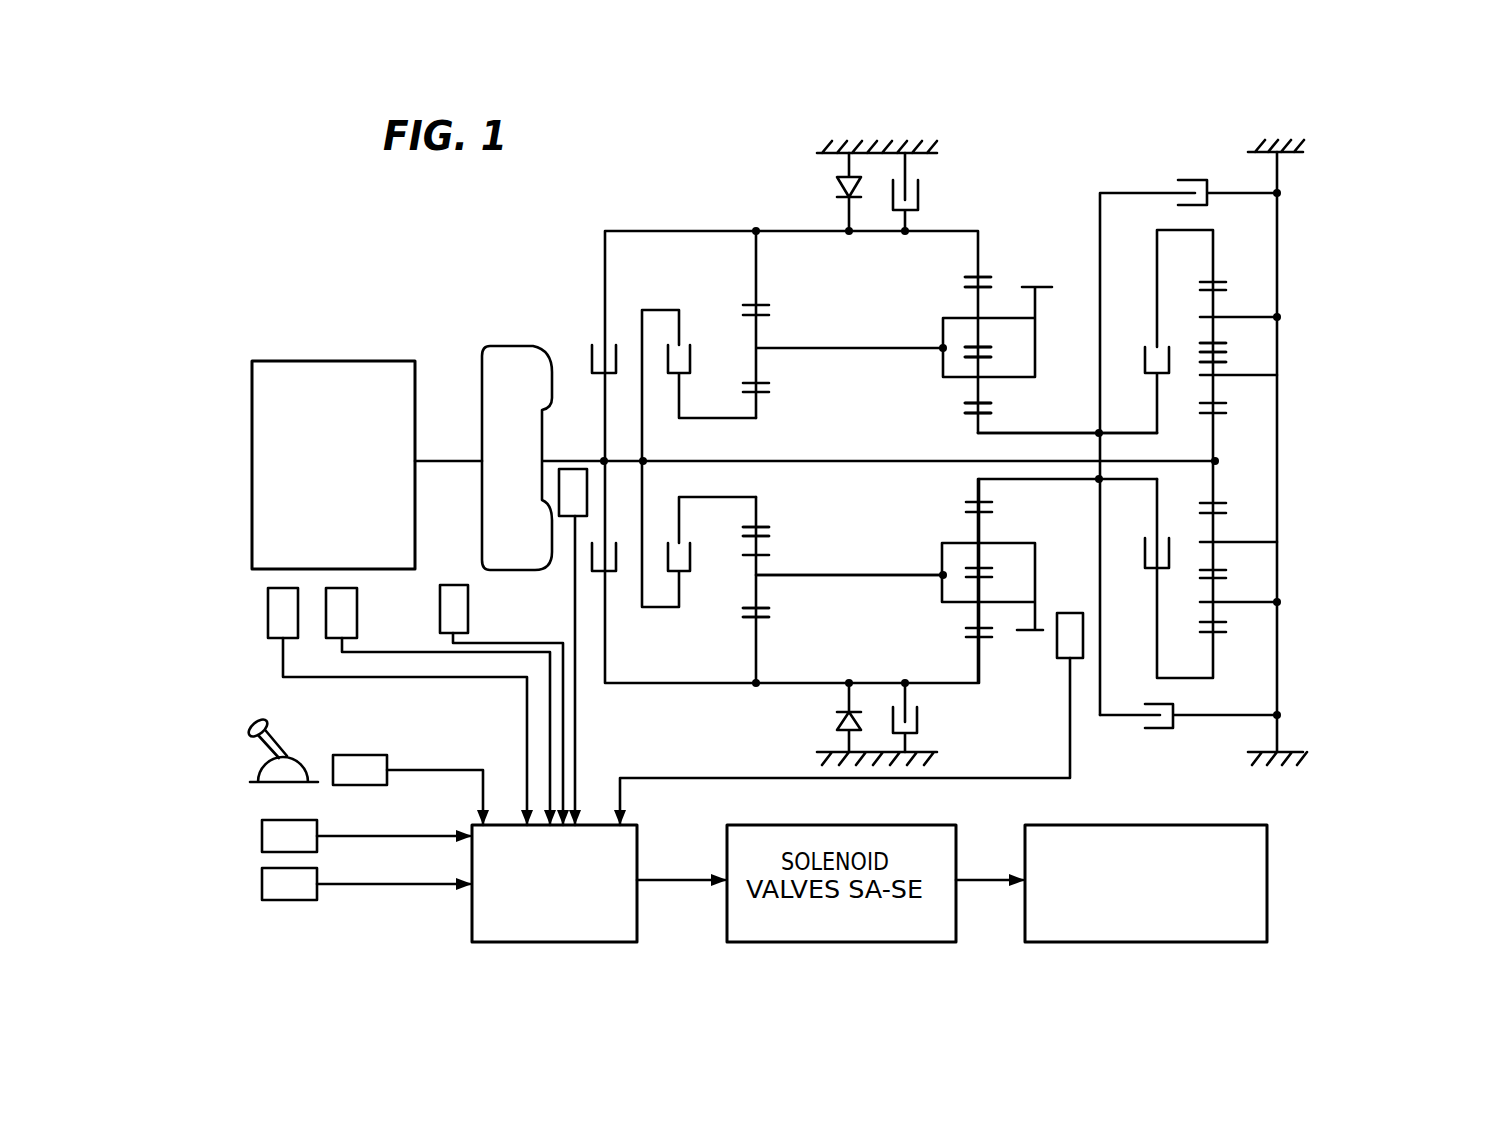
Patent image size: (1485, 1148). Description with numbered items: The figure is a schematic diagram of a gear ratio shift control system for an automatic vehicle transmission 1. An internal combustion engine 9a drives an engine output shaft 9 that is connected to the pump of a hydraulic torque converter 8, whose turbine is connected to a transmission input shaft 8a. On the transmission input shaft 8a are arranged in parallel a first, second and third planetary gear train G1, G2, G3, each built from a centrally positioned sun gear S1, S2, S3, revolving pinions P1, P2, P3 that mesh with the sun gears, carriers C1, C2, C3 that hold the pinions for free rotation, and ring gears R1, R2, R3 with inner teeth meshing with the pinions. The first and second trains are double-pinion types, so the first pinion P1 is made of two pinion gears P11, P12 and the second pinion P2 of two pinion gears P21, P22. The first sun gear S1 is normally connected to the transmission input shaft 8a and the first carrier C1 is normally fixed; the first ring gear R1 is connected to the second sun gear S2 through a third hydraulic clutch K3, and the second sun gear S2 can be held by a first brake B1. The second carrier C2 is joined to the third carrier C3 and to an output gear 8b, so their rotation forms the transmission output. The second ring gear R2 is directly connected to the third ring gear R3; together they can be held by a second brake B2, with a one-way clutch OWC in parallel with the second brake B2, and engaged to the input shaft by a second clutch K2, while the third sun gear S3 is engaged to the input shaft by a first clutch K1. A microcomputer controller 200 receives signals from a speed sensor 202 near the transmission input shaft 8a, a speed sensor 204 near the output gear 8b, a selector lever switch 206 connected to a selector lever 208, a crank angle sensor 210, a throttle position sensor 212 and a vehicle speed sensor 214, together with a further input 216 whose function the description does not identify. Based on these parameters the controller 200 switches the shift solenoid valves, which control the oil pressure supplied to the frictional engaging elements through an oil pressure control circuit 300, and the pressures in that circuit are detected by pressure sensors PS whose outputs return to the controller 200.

The automatic vehicle transmission 1 is at (621, 216).
The hydraulic torque converter 8 is at (500, 346).
The transmission input shaft 8a is at (858, 463).
The output gear 8b is at (1040, 632).
The engine output shaft 9 is at (437, 462).
The internal combustion engine 9a is at (384, 360).
The controller 200 is at (472, 920).
The speed sensor 202 is at (567, 516).
The speed sensor 204 is at (1070, 613).
The selector lever switch 206 is at (370, 757).
The selector lever 208 is at (297, 757).
The crank angle sensor 210 is at (268, 603).
The throttle position sensor 212 is at (357, 605).
The vehicle speed sensor 214 is at (455, 585).
The oil temperature sensor 216 is at (318, 828).
The oil pressure control circuit 300 is at (1270, 880).
The first planetary gear train G1 is at (1262, 393).
The second planetary gear train G2 is at (990, 218).
The third planetary gear train G3 is at (768, 218).
The first clutch K1 is at (692, 345).
The second clutch K2 is at (592, 345).
The third hydraulic clutch K3 is at (1170, 556).
The first brake B1 is at (1158, 730).
The second brake B2 is at (918, 718).
The one-way clutch OWC is at (833, 722).
The first ring gear R1 is at (1222, 280).
The second ring gear R2 is at (964, 278).
The third ring gear R3 is at (766, 620).
The first carrier C1 is at (1280, 332).
The second carrier C2 is at (943, 330).
The third carrier C3 is at (772, 577).
The first sun gear S1 is at (1224, 420).
The second sun gear S2 is at (970, 416).
The third sun gear S3 is at (770, 528).
The first revolving planetary pinion P1 is at (1378, 327).
The pinion gear P11 is at (1218, 362).
The pinion gear P12 is at (1218, 330).
The second revolving planetary pinion P2 is at (862, 360).
The pinion gear P21 is at (965, 398).
The pinion gear P22 is at (965, 340).
The third revolving planetary pinion P3 is at (770, 557).
The pressure sensors PS is at (367, 884).